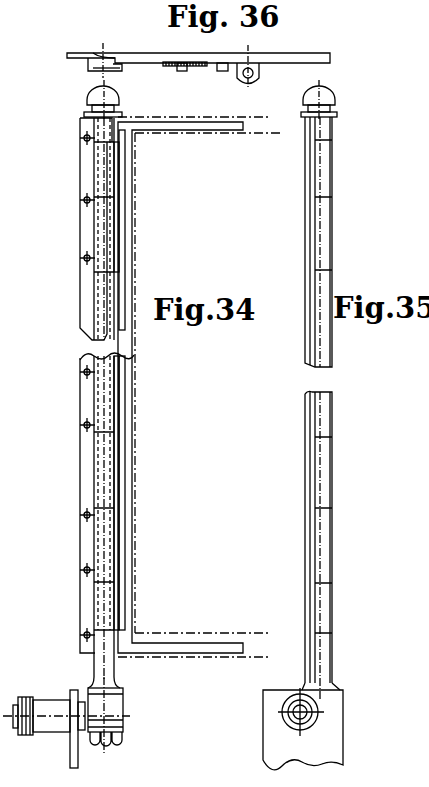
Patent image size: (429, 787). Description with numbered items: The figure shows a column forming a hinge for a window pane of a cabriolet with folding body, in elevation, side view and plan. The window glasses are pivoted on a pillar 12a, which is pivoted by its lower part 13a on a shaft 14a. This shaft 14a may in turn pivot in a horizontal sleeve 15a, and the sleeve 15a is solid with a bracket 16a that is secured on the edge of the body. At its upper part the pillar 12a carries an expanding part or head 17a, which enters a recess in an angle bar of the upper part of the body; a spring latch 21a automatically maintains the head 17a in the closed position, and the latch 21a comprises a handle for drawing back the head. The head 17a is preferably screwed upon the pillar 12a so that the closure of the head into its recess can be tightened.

In FIG. 34, the pillar 12a is at (103, 310).
In FIG. 35, the pillar 12a is at (320, 229).
In FIG. 34, the lower part of the pillar 13a is at (110, 705).
In FIG. 34, the shaft 14a is at (83, 700).
In FIG. 34, the horizontal sleeve 15a is at (58, 722).
In FIG. 35, the horizontal sleeve 15a is at (303, 712).
In FIG. 34, the bracket 16a is at (78, 760).
In FIG. 35, the bracket 16a is at (270, 744).
In FIG. 34, the head 17a is at (103, 97).
In FIG. 35, the head 17a is at (325, 96).
In FIG. 36, the spring latch 21a is at (157, 65).